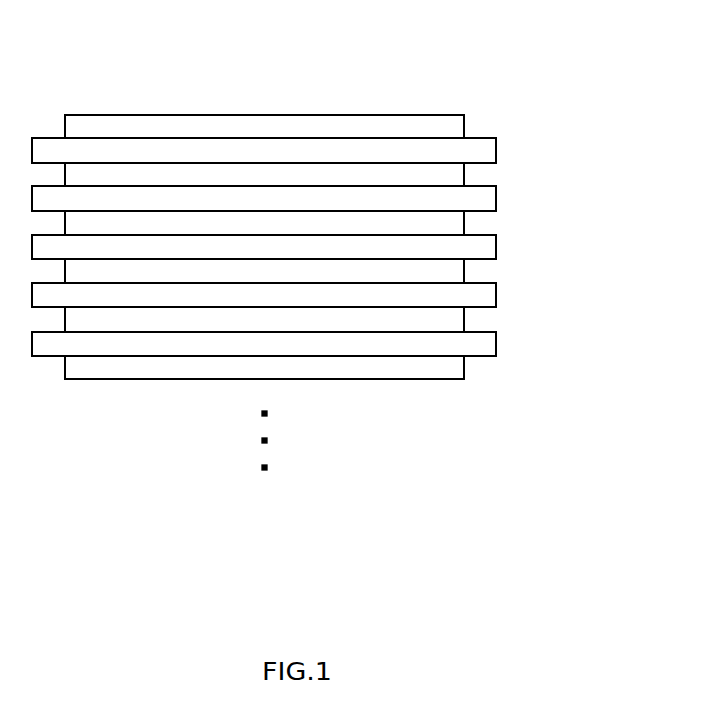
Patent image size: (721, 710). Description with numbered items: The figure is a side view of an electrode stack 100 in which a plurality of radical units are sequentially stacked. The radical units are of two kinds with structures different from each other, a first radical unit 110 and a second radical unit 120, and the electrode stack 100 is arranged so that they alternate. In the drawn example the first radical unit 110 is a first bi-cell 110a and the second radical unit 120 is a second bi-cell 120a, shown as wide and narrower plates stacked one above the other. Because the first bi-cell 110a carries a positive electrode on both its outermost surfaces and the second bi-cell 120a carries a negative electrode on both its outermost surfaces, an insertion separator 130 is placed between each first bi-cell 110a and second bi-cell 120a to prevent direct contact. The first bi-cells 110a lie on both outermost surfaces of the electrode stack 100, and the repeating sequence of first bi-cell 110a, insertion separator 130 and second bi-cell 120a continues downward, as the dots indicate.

The electrode stack 100 is at (263, 76).
The first radical unit 110 is at (503, 115).
The first bi-cell 110a is at (341, 174).
The second radical unit 120 is at (503, 253).
The second bi-cell 120a is at (341, 319).
The insertion separator 130 is at (487, 245).